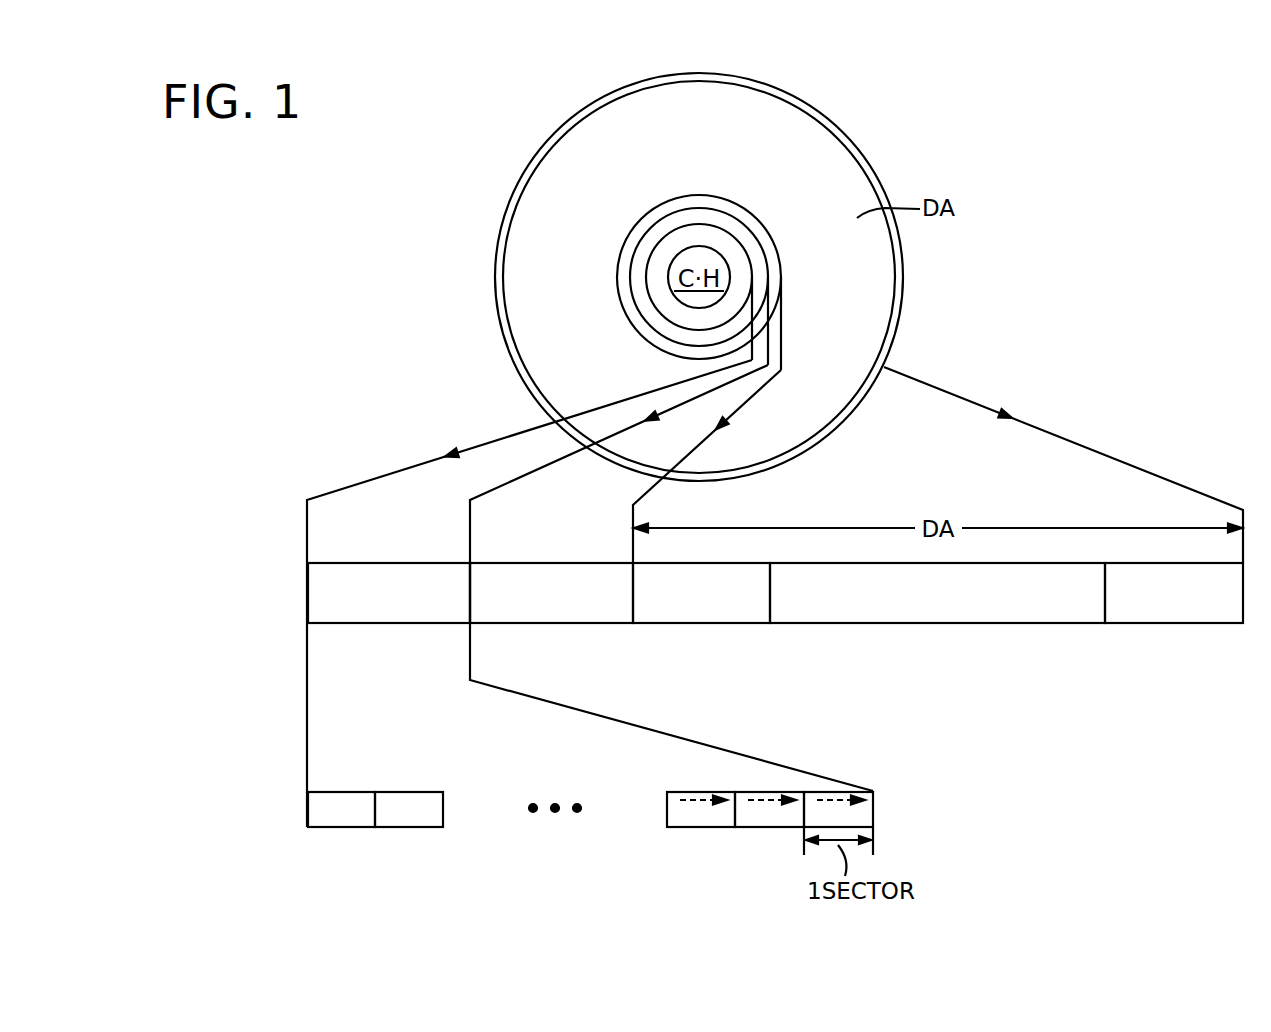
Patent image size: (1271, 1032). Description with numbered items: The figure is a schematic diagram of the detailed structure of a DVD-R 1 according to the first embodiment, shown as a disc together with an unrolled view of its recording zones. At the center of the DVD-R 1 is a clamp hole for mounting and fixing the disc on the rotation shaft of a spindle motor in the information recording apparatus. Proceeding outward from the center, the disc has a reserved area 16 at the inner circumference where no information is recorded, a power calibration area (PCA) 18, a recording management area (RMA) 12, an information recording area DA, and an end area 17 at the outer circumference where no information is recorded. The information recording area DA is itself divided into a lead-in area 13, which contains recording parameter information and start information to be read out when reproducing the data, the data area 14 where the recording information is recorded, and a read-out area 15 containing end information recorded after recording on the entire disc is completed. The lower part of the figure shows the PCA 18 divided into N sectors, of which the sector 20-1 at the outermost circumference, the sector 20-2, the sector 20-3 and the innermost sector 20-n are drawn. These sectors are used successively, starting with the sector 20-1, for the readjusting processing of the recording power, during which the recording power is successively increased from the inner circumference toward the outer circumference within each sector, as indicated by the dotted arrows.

The DVD-R 1 is at (498, 140).
The recording management area (RMA) 12 is at (763, 233).
The lead-in area 13 is at (738, 625).
The data area 14 is at (1040, 625).
The read-out area 15 is at (1212, 625).
The reserved area 16 is at (707, 235).
The end area 17 is at (895, 258).
The power calibration area (PCA) 18 is at (740, 232).
The sector 20-1 is at (875, 798).
The sector 20-2 is at (763, 829).
The sector 20-3 is at (716, 790).
The sector 20-n is at (345, 790).